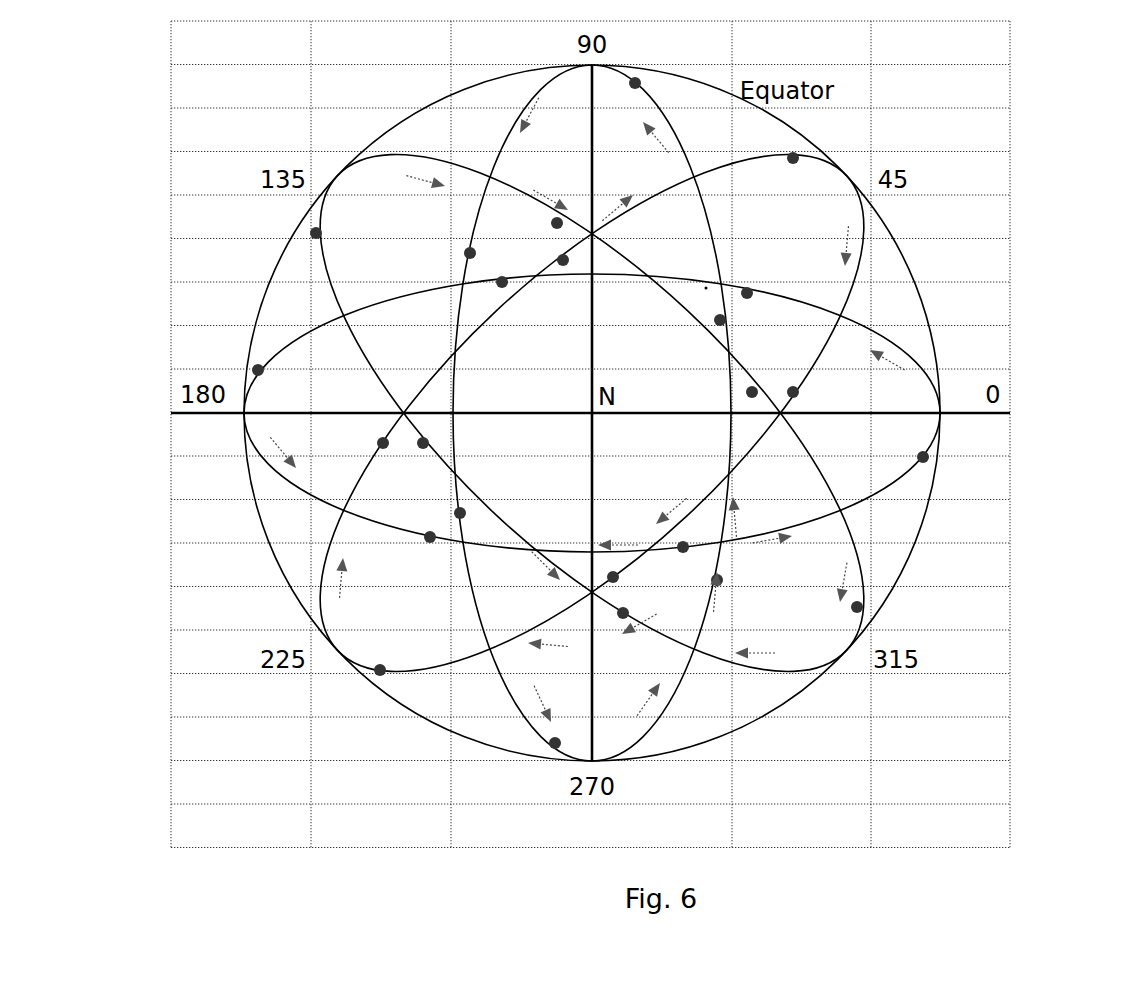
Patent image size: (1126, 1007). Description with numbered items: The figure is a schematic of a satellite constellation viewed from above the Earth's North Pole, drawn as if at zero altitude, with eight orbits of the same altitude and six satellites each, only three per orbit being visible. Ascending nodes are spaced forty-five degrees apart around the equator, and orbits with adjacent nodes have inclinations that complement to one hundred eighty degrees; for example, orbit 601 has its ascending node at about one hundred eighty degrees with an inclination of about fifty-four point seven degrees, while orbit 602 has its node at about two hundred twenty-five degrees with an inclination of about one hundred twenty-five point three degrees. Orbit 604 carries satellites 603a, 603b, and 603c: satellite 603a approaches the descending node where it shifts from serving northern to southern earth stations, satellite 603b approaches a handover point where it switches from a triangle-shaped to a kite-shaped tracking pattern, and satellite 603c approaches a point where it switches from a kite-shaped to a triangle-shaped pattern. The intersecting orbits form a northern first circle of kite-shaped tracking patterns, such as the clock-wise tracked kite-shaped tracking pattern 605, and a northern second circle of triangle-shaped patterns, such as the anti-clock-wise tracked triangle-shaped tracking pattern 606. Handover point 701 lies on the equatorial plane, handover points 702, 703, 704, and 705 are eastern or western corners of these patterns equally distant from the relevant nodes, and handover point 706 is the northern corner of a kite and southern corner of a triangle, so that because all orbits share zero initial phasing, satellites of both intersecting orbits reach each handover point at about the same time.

The orbit 601 is at (272, 475).
The orbit 602 is at (322, 598).
The satellite 603a is at (258, 370).
The satellite 603b is at (502, 282).
The satellite 603c is at (706, 288).
The orbit 604 is at (862, 337).
The clock-wise tracked kite-shaped tracking pattern 605 is at (830, 512).
The anti-clock-wise tracked triangle-shaped tracking pattern 606 is at (650, 548).
The handover point 701 is at (591, 759).
The handover point 702 is at (493, 650).
The handover point 703 is at (690, 657).
The handover point 704 is at (650, 548).
The handover point 705 is at (528, 551).
The handover point 706 is at (594, 588).